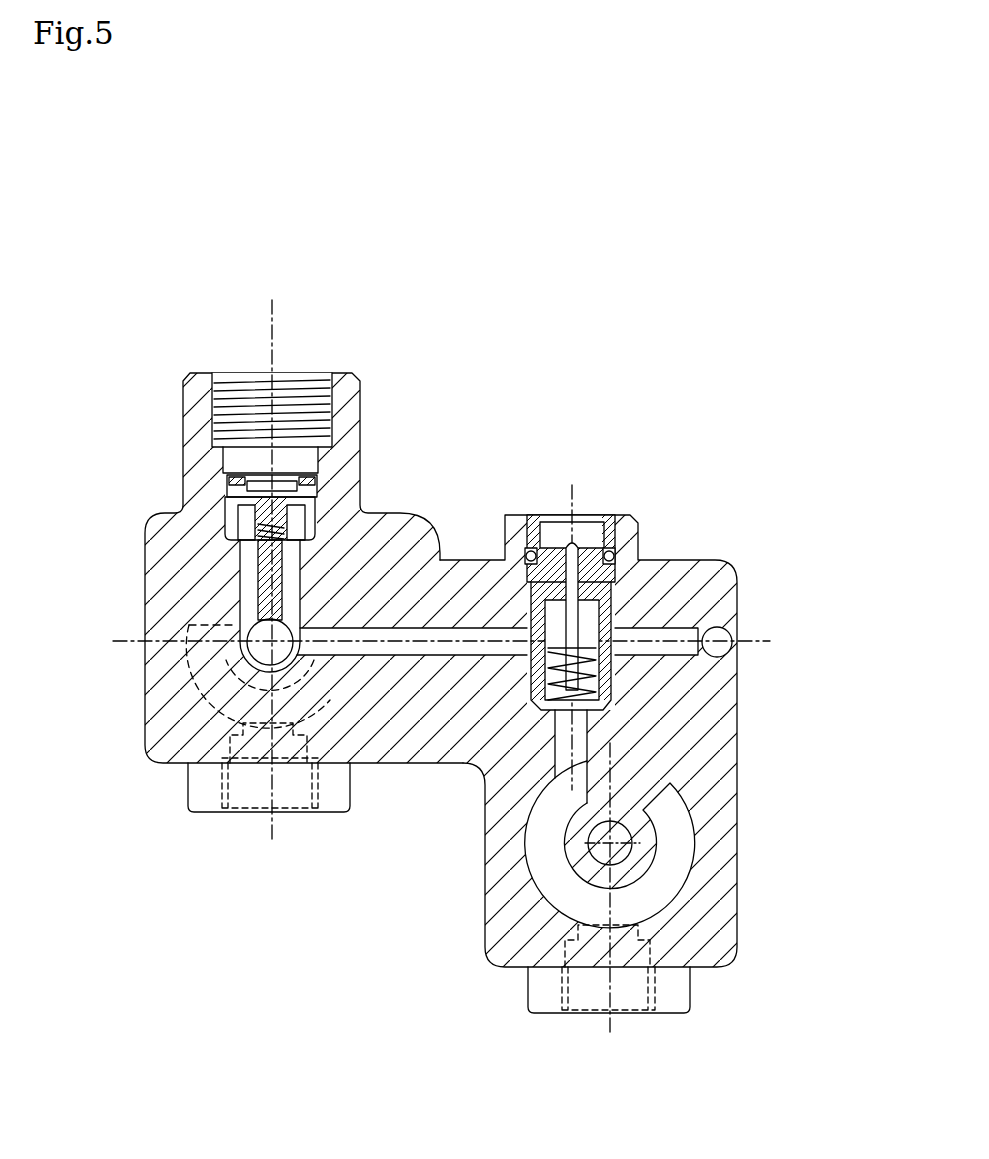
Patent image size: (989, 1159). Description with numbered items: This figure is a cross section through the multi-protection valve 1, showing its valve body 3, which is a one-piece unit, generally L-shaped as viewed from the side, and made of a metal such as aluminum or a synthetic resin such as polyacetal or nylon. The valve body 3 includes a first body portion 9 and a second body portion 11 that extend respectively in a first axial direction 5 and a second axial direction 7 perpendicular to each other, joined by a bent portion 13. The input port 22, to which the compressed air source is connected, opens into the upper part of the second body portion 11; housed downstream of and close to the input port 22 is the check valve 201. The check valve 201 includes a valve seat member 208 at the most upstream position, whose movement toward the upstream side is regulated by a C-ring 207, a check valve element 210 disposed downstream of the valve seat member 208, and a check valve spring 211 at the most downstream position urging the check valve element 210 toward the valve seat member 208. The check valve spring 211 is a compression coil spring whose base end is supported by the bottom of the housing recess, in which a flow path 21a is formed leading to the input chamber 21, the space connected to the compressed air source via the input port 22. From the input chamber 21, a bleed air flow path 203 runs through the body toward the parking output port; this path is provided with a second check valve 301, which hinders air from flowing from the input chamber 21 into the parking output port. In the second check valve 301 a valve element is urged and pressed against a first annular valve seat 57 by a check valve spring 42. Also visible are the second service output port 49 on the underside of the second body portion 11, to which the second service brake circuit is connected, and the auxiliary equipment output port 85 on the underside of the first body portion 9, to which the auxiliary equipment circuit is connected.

The multi-protection valve 1 is at (745, 440).
The valve body 3 is at (737, 762).
The first axial direction 5 is at (606, 1026).
The second axial direction 7 is at (133, 640).
The first body portion 9 is at (737, 925).
The second body portion 11 is at (143, 562).
The bent portion 13 is at (727, 565).
The input chamber 21 is at (262, 653).
The flow path 21a is at (247, 578).
The input port 22 is at (240, 372).
The check valve spring 42 is at (593, 662).
The second service output port 49 is at (285, 813).
The first annular valve seat 57 is at (587, 712).
The auxiliary equipment output port 85 is at (628, 1015).
The check valve 201 is at (218, 368).
The bleed air flow path 203 is at (387, 650).
The C-ring 207 is at (226, 480).
The valve seat member 208 is at (325, 476).
The check valve element 210 is at (315, 510).
The check valve spring 211 is at (312, 550).
The second check valve 301 is at (587, 488).